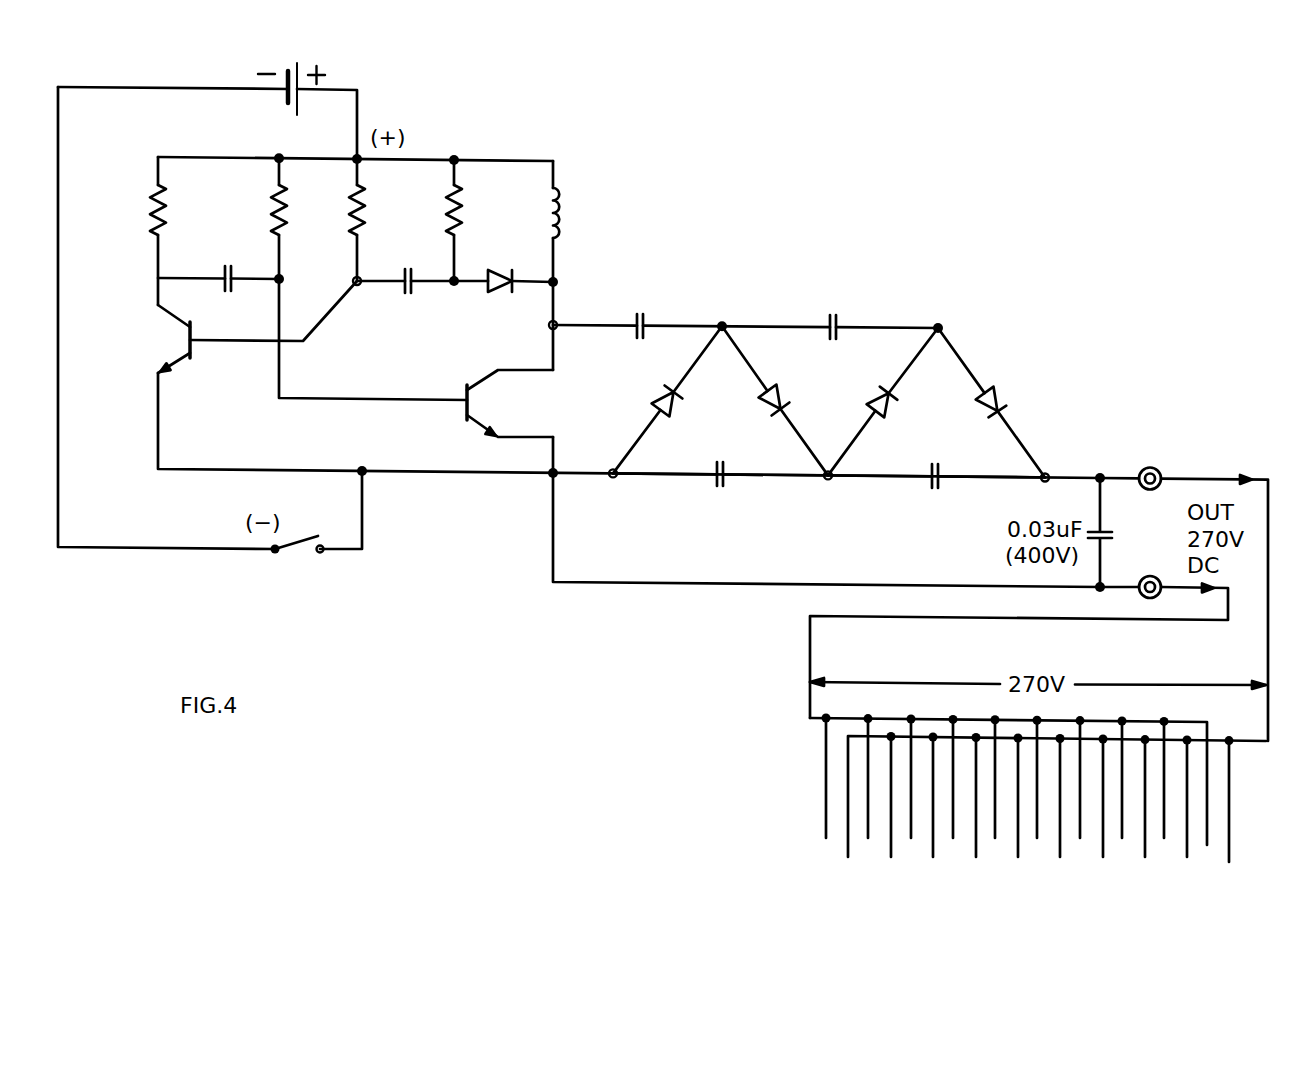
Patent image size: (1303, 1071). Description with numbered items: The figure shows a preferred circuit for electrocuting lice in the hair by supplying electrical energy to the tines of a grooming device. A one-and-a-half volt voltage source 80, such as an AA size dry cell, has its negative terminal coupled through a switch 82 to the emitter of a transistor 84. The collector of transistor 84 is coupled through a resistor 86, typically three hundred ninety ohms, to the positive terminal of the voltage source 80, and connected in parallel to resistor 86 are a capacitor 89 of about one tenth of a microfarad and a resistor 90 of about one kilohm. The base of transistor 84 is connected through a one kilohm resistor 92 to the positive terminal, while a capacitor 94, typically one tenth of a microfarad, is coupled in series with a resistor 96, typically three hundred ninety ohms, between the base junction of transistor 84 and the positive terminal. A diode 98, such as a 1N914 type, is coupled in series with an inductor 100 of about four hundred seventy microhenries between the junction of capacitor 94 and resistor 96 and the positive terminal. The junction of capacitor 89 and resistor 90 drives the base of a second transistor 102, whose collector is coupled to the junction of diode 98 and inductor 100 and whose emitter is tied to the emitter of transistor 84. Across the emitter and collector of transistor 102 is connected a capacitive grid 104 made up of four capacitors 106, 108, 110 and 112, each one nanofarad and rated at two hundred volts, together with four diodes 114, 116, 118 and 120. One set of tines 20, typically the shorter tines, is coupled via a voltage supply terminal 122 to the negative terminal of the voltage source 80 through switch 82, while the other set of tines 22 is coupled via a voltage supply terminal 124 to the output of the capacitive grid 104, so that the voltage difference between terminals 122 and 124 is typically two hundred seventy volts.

The voltage source 80 is at (297, 72).
The switch 82 is at (303, 545).
The transistor 84 is at (183, 362).
The resistor 86 is at (152, 188).
The capacitor 89 is at (226, 266).
The resistor 90 is at (270, 205).
The resistor 92 is at (367, 205).
The capacitor 94 is at (412, 270).
The resistor 96 is at (460, 200).
The diode 98 is at (497, 272).
The inductor 100 is at (563, 212).
The transistor 102 is at (465, 398).
The capacitive grid 104 is at (978, 298).
The capacitor 106 is at (648, 320).
The capacitor 108 is at (845, 320).
The capacitor 110 is at (712, 478).
The capacitor 112 is at (928, 480).
The diode 114 is at (668, 395).
The diode 116 is at (770, 398).
The diode 118 is at (875, 408).
The diode 120 is at (985, 407).
The voltage supply terminal 122 is at (1147, 575).
The voltage supply terminal 124 is at (1140, 470).
The set of tines 20 is at (1080, 838).
The set of tines 22 is at (891, 857).